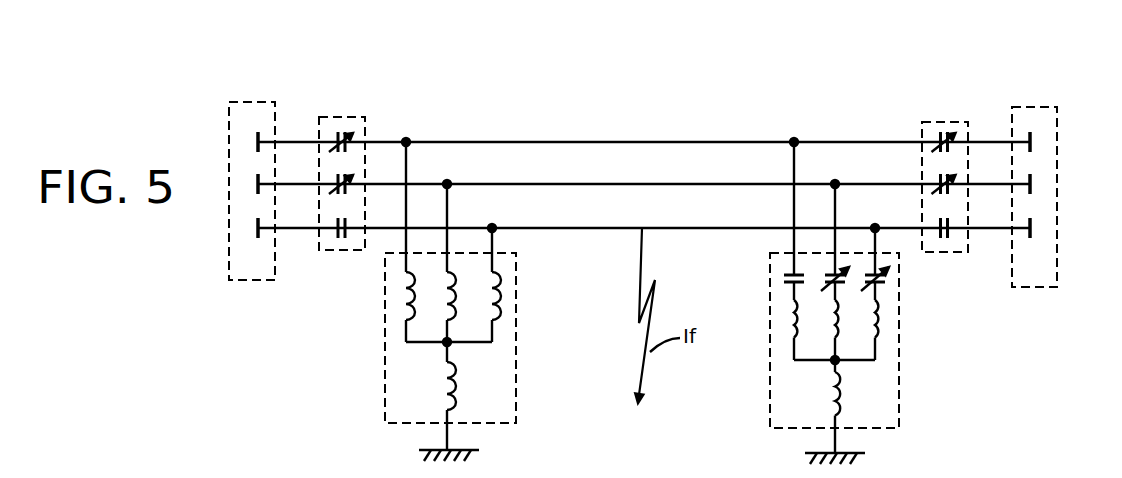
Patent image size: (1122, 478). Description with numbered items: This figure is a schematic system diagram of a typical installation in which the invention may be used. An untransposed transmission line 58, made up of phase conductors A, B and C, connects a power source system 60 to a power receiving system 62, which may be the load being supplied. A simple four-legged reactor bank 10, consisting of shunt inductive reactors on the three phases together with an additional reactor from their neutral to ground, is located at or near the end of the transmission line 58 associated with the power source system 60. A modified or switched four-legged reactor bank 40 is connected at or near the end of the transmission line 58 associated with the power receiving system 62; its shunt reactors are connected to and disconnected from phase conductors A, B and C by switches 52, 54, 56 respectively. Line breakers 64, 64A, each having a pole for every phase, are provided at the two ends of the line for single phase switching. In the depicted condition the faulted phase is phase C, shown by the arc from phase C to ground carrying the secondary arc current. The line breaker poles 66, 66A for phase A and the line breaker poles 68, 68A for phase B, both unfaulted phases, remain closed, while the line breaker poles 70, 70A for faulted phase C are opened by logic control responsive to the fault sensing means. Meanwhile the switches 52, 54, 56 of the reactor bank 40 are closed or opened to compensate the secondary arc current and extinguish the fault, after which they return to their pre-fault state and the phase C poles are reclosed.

The power source system 60 is at (271, 100).
The line breaker 64 is at (363, 157).
The line breaker pole 66 is at (349, 131).
The line breaker pole 68 is at (348, 174).
The line breaker pole 70 is at (348, 218).
The untransposed transmission line 58 is at (512, 141).
The simple four-legged reactor bank 10 is at (517, 274).
The switch 52 is at (784, 281).
The switch 54 is at (829, 279).
The switch 56 is at (887, 279).
The modified or switched four-legged reactor bank 40 is at (841, 301).
The line breaker 64A is at (924, 163).
The line breaker pole 66A is at (938, 132).
The line breaker pole 68A is at (938, 175).
The line breaker pole 70A is at (938, 218).
The power receiving system 62 is at (1055, 106).